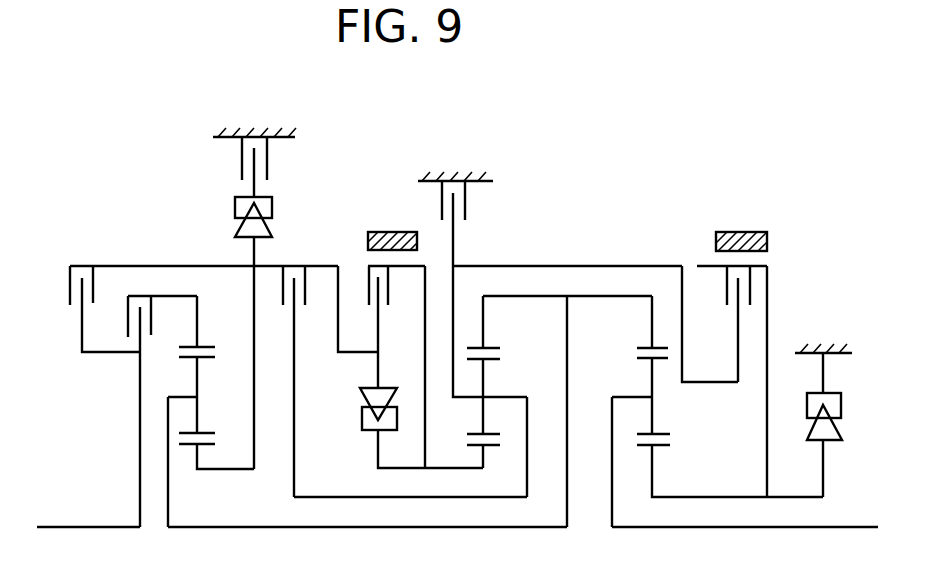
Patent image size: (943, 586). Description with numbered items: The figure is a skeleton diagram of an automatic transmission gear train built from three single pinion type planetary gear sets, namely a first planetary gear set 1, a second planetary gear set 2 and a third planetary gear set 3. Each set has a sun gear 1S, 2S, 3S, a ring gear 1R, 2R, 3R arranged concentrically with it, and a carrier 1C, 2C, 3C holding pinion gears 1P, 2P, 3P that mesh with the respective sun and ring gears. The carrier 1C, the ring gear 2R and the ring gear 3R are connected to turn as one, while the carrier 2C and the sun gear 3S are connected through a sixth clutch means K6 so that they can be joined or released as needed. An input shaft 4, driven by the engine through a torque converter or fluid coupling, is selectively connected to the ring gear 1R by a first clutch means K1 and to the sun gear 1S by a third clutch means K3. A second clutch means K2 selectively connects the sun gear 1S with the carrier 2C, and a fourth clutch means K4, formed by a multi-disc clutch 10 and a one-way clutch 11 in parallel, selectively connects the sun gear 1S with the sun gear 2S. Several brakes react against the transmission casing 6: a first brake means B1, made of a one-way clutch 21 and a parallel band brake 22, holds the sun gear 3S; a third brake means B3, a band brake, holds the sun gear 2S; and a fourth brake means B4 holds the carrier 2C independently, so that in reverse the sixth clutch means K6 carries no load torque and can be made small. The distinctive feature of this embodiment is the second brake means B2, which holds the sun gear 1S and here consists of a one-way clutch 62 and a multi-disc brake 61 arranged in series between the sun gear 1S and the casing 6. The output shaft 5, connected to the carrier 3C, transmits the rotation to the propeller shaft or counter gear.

The transmission casing 6 is at (258, 128).
The multi-disc brake 61 is at (270, 160).
The one-way clutch 62 is at (272, 209).
The second brake means B2 is at (338, 182).
The third brake means B3 is at (394, 227).
The fourth brake means B4 is at (562, 223).
The third clutch means K3 is at (204, 297).
The first clutch means K1 is at (162, 400).
The second clutch means K2 is at (305, 291).
The multi-disc clutch 10 is at (389, 291).
The one-way clutch 11 is at (362, 418).
The fourth clutch means K4 is at (352, 458).
The first planetary gear set 1 is at (205, 485).
The ring gear 1R is at (205, 345).
The carrier 1C is at (183, 396).
The pinion gear 1P is at (205, 432).
The sun gear 1S is at (210, 446).
The second planetary gear set 2 is at (482, 478).
The ring gear 2R is at (490, 345).
The carrier 2C is at (500, 397).
The pinion gear 2P is at (487, 432).
The sun gear 2S is at (487, 447).
The third planetary gear set 3 is at (642, 493).
The ring gear 3R is at (648, 345).
The carrier 3C is at (638, 397).
The pinion gear 3P is at (660, 433).
The sun gear 3S is at (660, 447).
The sixth clutch means K6 is at (724, 381).
The band brake 22 is at (741, 232).
The first brake means B1 is at (772, 207).
The one-way clutch 21 is at (830, 395).
The input shaft 4 is at (72, 527).
The output shaft 5 is at (835, 527).